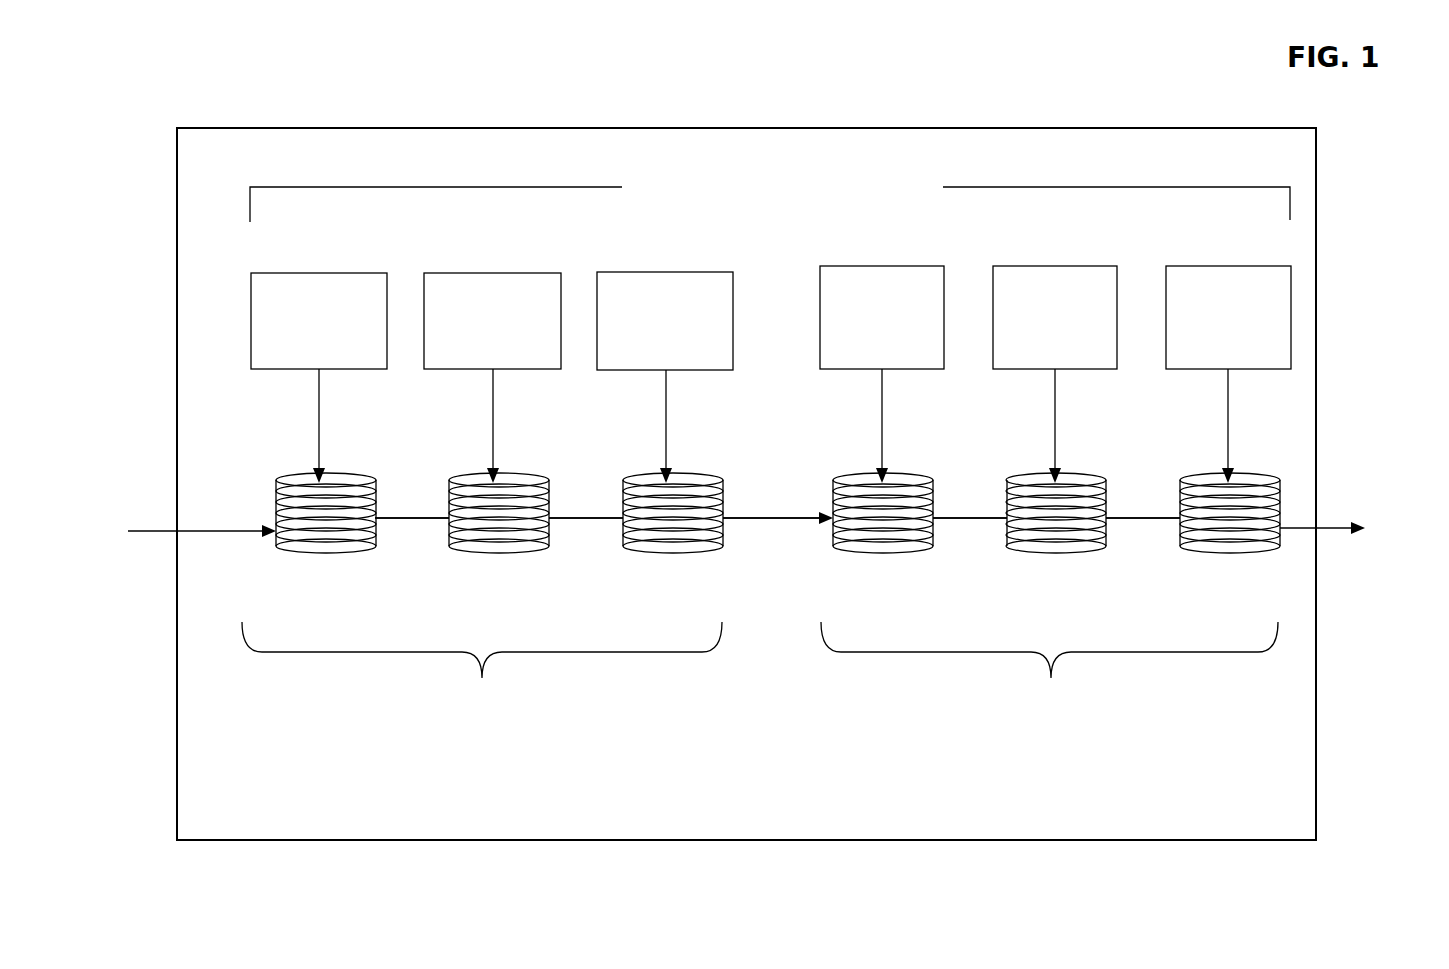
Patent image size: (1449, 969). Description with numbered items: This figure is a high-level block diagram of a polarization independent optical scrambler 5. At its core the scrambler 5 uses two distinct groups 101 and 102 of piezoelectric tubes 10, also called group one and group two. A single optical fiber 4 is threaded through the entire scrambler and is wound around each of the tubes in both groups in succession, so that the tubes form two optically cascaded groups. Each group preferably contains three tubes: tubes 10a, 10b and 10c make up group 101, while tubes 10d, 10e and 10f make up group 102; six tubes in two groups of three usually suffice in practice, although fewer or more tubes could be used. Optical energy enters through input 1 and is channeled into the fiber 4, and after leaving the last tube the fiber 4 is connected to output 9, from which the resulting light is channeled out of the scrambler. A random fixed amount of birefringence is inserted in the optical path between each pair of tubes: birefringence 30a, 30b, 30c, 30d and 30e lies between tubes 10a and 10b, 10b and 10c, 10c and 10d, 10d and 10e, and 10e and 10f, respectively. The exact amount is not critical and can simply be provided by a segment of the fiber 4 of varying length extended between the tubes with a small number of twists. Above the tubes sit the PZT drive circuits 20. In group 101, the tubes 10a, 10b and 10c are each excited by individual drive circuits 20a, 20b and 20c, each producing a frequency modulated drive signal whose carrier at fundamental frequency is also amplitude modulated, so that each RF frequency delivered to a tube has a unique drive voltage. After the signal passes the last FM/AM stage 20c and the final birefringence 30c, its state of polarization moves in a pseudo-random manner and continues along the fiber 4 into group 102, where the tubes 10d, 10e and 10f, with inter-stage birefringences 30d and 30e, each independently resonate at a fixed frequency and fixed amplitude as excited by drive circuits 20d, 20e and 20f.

The polarization independent optical scrambler 5 is at (287, 128).
The drive circuits 20 is at (770, 199).
The drive circuit 20a is at (325, 273).
The drive circuit 20b is at (498, 273).
The drive circuit 20c is at (672, 272).
The drive circuit 20d is at (892, 266).
The drive circuit 20e is at (1068, 266).
The drive circuit 20f is at (1225, 266).
The piezoelectric tubes 10 is at (261, 434).
The tube 10a is at (327, 553).
The tube 10b is at (500, 553).
The tube 10c is at (675, 553).
The tube 10d is at (885, 553).
The tube 10e is at (1058, 553).
The tube 10f is at (1230, 553).
The group 1 101 is at (482, 687).
The group 2 102 is at (1049, 687).
The birefringence 30a is at (422, 518).
The birefringence 30b is at (600, 518).
The birefringence 30c is at (783, 518).
The birefringence 30d is at (983, 518).
The birefringence 30e is at (1155, 518).
The input 1 is at (152, 533).
The single optical fiber 4 is at (215, 547).
The output 9 is at (1332, 530).